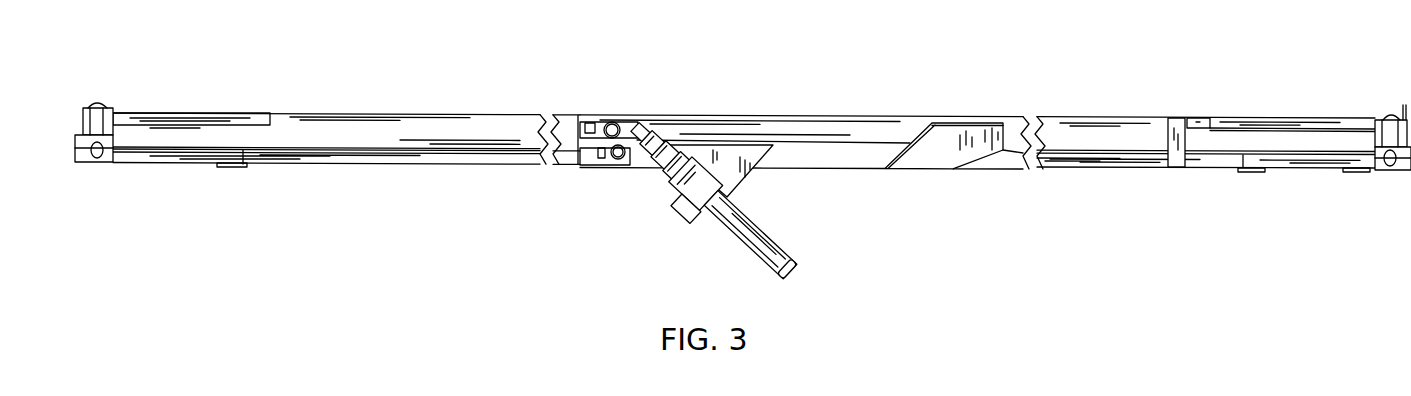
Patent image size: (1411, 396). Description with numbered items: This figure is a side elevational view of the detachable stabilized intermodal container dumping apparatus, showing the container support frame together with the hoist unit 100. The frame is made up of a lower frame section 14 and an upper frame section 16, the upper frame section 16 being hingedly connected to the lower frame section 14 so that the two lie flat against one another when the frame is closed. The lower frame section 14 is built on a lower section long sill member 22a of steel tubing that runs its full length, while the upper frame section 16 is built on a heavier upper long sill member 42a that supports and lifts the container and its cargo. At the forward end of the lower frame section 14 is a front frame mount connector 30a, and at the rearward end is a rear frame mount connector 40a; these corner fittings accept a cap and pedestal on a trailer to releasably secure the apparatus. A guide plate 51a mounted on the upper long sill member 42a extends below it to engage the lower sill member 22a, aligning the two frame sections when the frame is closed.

The lower frame section 14 is at (427, 171).
The upper frame section 16 is at (465, 106).
The lower section long sill member 22a is at (1108, 168).
The front frame mount connector 30a is at (108, 157).
The rear frame mount connector 40a is at (1403, 172).
The upper long sill member 42a is at (1098, 137).
The guide plate 51a is at (1180, 168).
The hoist unit 100 is at (748, 181).